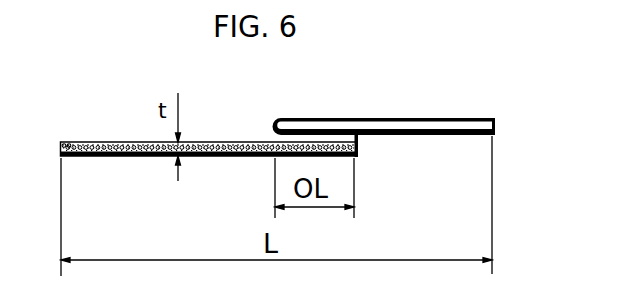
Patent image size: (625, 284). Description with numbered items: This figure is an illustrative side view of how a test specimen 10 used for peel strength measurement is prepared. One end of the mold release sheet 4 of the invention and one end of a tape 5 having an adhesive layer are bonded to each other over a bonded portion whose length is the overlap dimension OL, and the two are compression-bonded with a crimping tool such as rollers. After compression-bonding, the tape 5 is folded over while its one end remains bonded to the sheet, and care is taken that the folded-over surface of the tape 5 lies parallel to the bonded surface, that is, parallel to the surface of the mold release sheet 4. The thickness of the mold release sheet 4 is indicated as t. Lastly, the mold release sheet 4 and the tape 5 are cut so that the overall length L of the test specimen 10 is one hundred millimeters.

The mold release sheet 4 is at (233, 142).
The tape 5 is at (423, 118).
The test specimen 10 is at (507, 91).